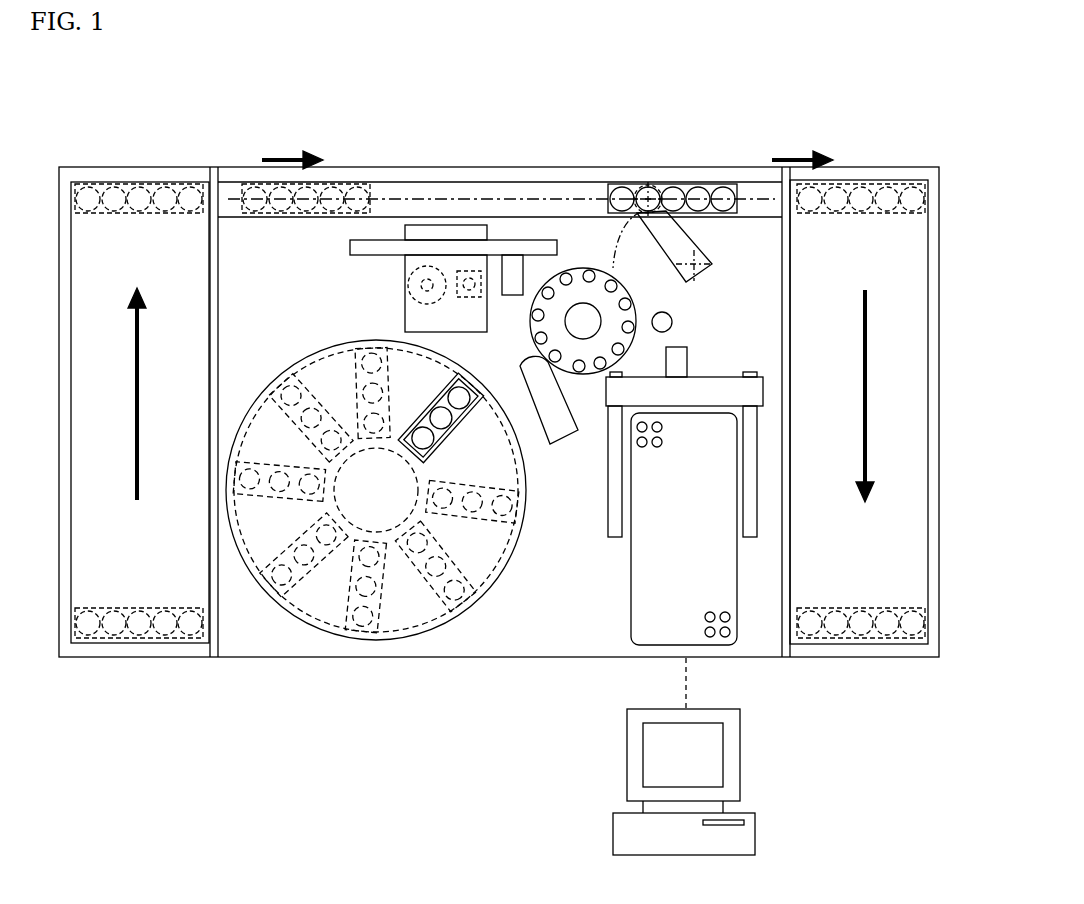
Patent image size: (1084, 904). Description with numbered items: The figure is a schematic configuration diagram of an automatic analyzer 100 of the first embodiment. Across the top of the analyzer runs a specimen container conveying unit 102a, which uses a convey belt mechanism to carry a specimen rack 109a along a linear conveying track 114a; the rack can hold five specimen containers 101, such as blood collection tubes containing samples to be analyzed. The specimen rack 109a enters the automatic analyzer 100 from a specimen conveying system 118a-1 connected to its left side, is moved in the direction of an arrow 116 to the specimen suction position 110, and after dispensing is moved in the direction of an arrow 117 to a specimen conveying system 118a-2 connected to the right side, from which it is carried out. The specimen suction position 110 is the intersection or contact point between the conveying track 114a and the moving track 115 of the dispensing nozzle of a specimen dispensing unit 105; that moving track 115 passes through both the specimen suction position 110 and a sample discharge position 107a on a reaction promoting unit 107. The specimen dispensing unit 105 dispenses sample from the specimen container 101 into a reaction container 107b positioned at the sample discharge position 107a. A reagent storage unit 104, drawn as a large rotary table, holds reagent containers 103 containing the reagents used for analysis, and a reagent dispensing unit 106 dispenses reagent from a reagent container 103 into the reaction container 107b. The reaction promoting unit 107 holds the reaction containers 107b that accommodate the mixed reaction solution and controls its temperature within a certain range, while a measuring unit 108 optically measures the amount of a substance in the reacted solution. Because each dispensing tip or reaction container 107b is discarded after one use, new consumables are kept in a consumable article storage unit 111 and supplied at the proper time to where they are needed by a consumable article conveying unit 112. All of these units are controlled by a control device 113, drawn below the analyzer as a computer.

The automatic analyzer 100 is at (300, 85).
The specimen container 101 is at (683, 183).
The specimen container conveying unit 102a is at (755, 180).
The reagent container 103 is at (370, 597).
The reagent storage unit 104 is at (353, 643).
The specimen dispensing unit 105 is at (663, 227).
The reagent dispensing unit 106 is at (530, 392).
The reaction promoting unit 107 is at (590, 293).
The sample discharge position 107a is at (619, 283).
The reaction container 107b is at (582, 373).
The measuring unit 108 is at (426, 232).
The specimen rack 109a is at (620, 182).
The specimen suction position 110 is at (650, 195).
The consumable article storage unit 111 is at (730, 583).
The consumable article conveying unit 112 is at (729, 392).
The control device 113 is at (757, 843).
The conveying track 114a is at (478, 196).
The moving track 115 is at (612, 253).
The arrow 116 is at (286, 155).
The arrow 117 is at (800, 152).
The specimen conveying system 118a-1 is at (125, 166).
The specimen conveying system 118a-2 is at (912, 166).